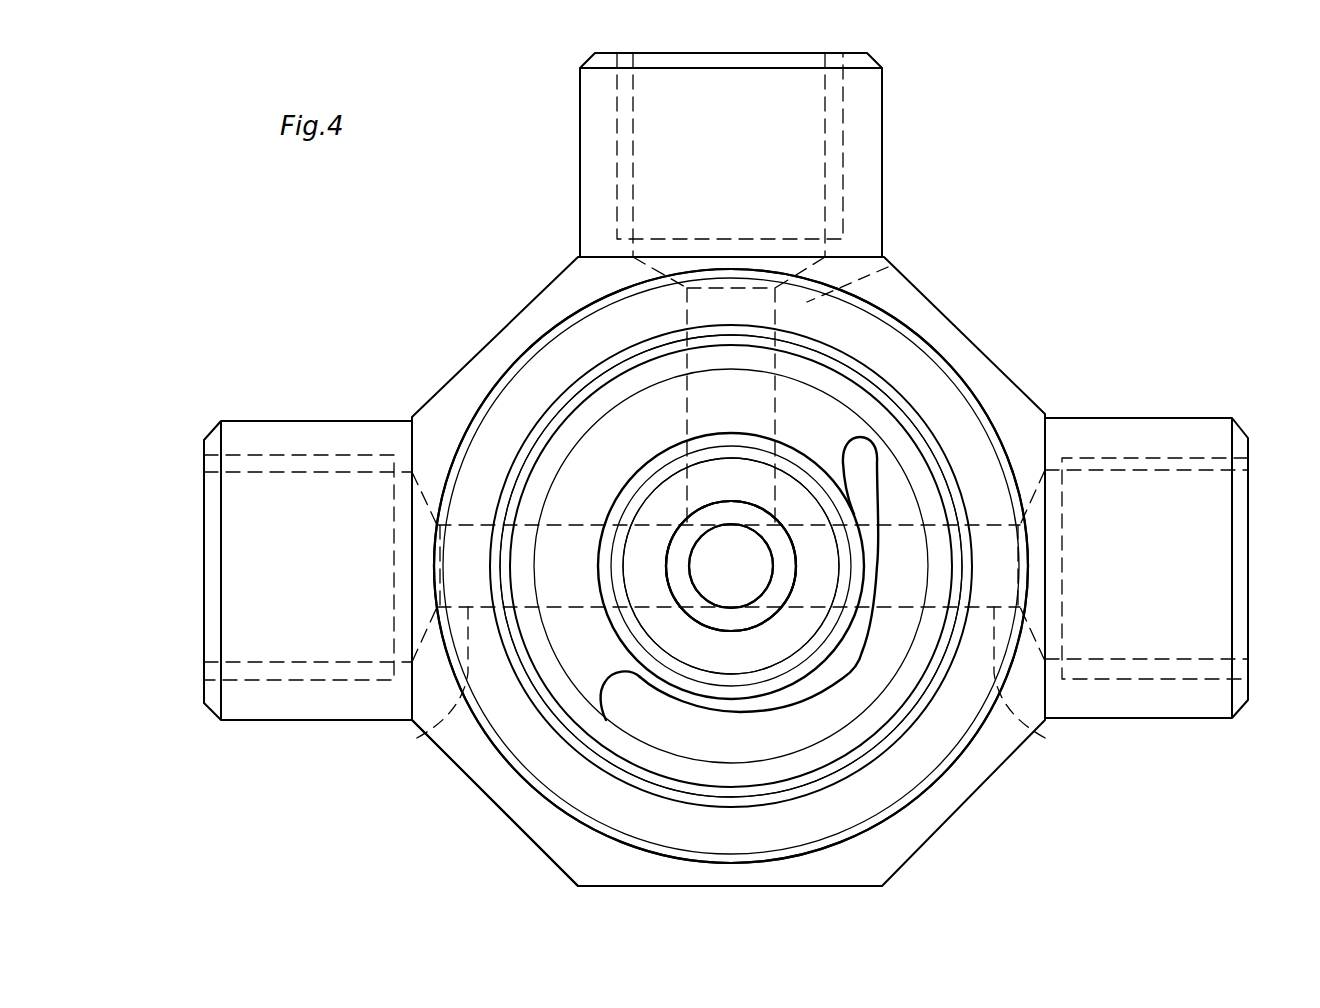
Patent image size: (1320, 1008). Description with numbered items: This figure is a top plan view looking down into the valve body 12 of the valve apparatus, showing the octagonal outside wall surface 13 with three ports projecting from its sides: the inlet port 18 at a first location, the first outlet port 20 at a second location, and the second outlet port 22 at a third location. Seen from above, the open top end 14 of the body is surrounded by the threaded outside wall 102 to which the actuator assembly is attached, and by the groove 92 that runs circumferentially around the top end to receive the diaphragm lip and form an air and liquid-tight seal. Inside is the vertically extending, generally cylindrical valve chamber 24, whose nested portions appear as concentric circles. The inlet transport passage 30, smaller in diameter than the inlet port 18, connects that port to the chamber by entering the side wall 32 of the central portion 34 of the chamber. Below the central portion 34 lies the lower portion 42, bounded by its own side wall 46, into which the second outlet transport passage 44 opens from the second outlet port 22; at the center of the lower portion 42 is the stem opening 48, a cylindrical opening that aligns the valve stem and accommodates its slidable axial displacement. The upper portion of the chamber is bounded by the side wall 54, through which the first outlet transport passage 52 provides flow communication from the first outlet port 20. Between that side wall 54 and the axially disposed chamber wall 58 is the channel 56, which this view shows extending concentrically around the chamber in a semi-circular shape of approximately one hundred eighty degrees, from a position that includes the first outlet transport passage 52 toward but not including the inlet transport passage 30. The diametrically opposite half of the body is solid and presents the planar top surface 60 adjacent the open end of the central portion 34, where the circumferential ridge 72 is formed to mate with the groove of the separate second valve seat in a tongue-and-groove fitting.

The valve body 12 is at (935, 328).
The outside wall surface 13 is at (518, 830).
The open top end 14 is at (528, 418).
The inlet port 18 is at (265, 540).
The first outlet port 20 is at (1195, 555).
The second outlet port 22 is at (757, 92).
The valve chamber 24 is at (673, 620).
The inlet transport passage 30 is at (440, 720).
The side wall 32 is at (830, 545).
The central portion 34 is at (748, 668).
The lower portion 42 is at (757, 607).
The second outlet transport passage 44 is at (888, 267).
The side wall 46 is at (677, 590).
The stem opening 48 is at (748, 580).
The first outlet transport passage 52 is at (1020, 732).
The side wall 54 is at (906, 498).
The channel 56 is at (748, 756).
The chamber wall 58 is at (857, 658).
The planer top surface 60 is at (622, 466).
The ridge 72 is at (780, 463).
The groove 92 is at (884, 397).
The outside wall 102 is at (884, 815).